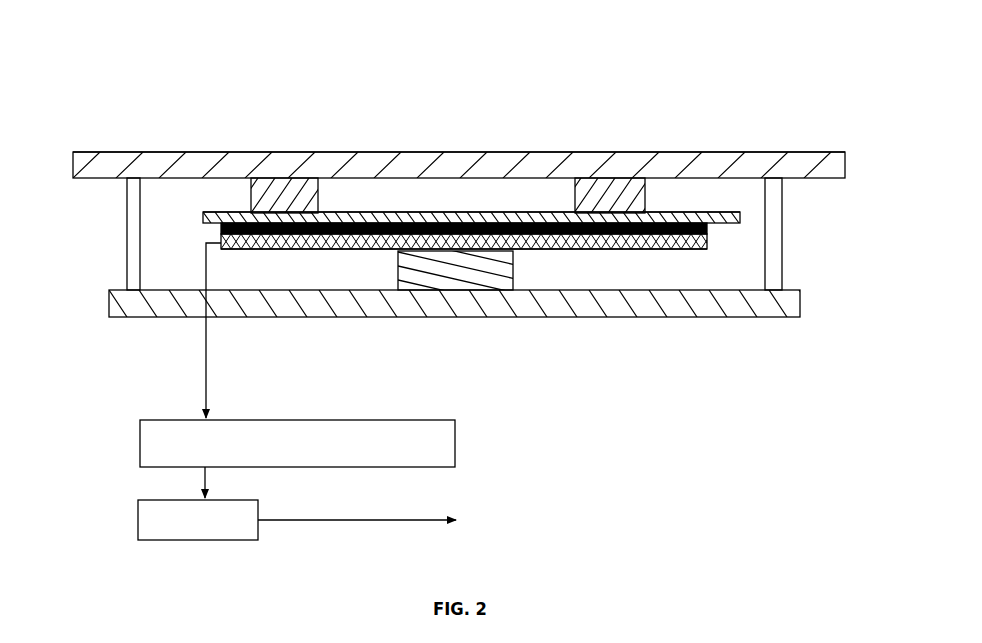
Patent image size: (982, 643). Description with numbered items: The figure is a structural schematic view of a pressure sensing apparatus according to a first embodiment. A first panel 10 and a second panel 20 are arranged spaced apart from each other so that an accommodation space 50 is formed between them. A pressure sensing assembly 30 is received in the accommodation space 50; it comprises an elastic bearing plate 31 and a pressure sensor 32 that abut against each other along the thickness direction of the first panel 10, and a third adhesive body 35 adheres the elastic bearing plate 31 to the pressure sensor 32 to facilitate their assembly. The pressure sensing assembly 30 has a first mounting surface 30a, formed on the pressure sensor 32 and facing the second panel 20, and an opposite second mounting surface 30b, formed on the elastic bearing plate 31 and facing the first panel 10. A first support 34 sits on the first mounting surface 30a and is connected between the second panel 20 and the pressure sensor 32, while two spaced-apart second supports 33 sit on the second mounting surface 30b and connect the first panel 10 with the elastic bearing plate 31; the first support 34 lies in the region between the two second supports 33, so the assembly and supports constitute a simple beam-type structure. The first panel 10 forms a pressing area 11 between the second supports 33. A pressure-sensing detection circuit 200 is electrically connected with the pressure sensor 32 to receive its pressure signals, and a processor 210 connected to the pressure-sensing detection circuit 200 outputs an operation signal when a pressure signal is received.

The first panel 10 is at (721, 160).
The pressing area 11 is at (505, 150).
The second panel 20 is at (657, 305).
The pressure sensing assembly 30 is at (526, 236).
The first mounting surface 30a is at (366, 253).
The second mounting surface 30b is at (363, 212).
The elastic bearing plate 31 is at (700, 221).
The pressure sensor 32 is at (709, 243).
The second supports 33 is at (276, 195).
The first support 34 is at (452, 270).
The third adhesive body 35 is at (221, 229).
The accommodation space 50 is at (184, 213).
The pressure-sensing detection circuit 200 is at (140, 438).
The processor 210 is at (138, 513).